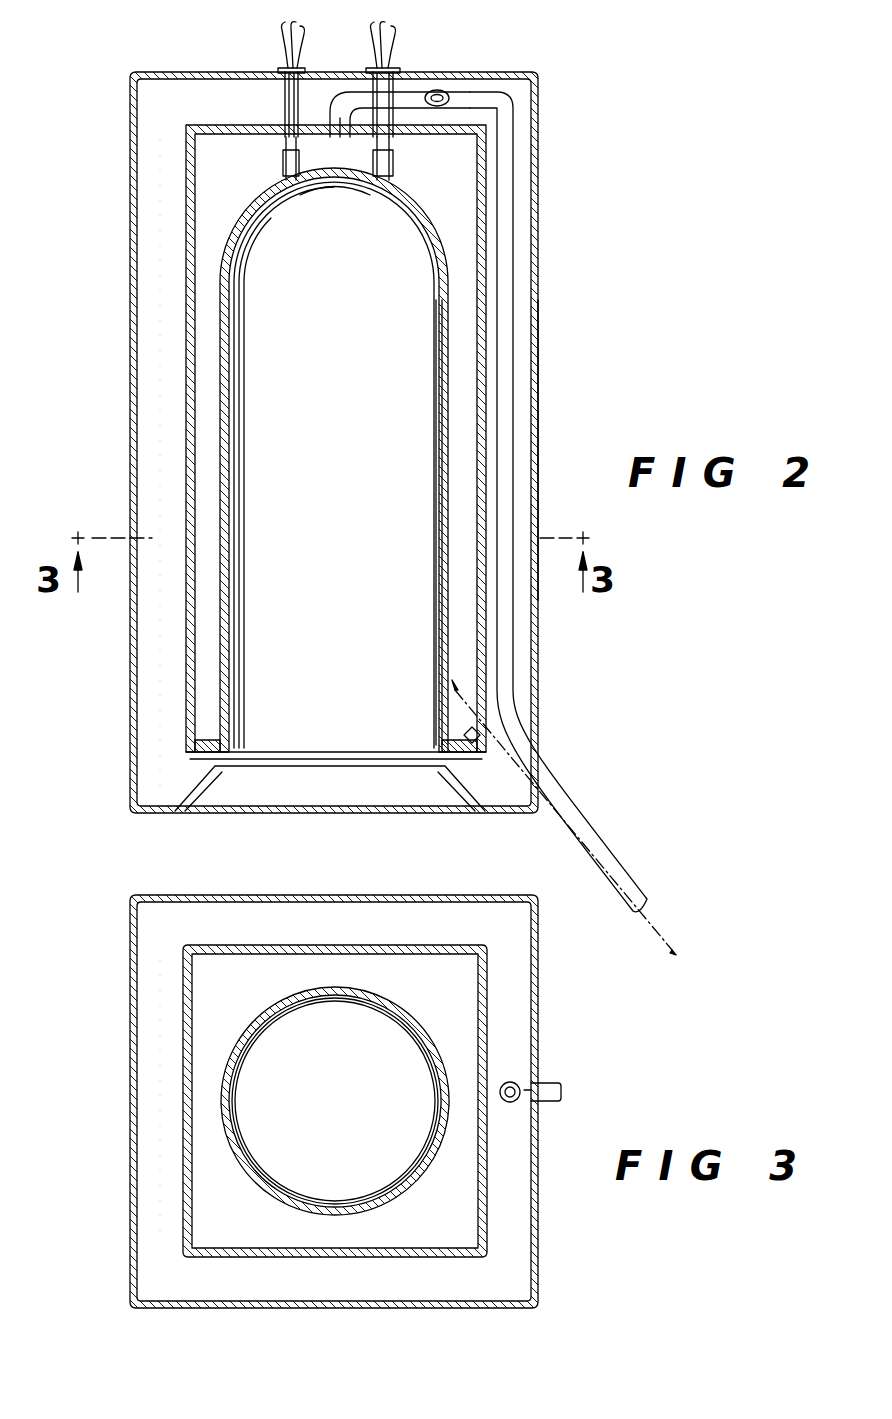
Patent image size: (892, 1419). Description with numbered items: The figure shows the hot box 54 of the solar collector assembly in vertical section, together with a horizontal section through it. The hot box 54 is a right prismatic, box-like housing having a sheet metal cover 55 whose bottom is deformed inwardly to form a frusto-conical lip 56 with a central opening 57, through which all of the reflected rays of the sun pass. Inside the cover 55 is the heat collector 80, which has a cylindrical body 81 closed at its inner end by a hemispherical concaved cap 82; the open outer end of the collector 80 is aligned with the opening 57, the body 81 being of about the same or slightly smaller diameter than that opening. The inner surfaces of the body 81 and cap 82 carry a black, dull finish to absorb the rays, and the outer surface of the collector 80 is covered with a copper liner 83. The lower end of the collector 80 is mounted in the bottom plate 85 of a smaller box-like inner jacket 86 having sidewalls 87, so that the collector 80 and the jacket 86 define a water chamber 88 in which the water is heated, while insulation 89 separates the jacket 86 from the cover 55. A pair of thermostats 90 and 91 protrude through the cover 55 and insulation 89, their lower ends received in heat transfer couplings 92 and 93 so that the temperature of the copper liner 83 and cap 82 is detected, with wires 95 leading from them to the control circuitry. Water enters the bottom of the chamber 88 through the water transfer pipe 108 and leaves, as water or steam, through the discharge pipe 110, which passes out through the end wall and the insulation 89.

In FIG. 2, the hot box 54 is at (540, 73).
In FIG. 2, the sheet metal cover 55 is at (538, 322).
In FIG. 3, the sheet metal cover 55 is at (538, 1006).
In FIG. 2, the frusto-conical lip 56 is at (390, 777).
In FIG. 2, the central opening 57 is at (318, 760).
In FIG. 2, the heat collector 80 is at (438, 563).
In FIG. 3, the heat collector 80 is at (284, 1190).
In FIG. 2, the cylindrical body 81 is at (440, 475).
In FIG. 3, the cylindrical body 81 is at (237, 1128).
In FIG. 2, the hemispherical concaved cap 82 is at (270, 192).
In FIG. 2, the copper liner 83 is at (443, 416).
In FIG. 3, the copper liner 83 is at (255, 1014).
In FIG. 2, the bottom plate 85 is at (450, 722).
In FIG. 3, the bottom plate 85 is at (460, 1225).
In FIG. 2, the inner jacket 86 is at (176, 432).
In FIG. 2, the sidewalls 87 is at (208, 342).
In FIG. 3, the sidewalls 87 is at (196, 1022).
In FIG. 2, the water chamber 88 is at (234, 229).
In FIG. 2, the insulation 89 is at (150, 236).
In FIG. 3, the insulation 89 is at (515, 1154).
In FIG. 2, the thermostat 90 is at (292, 85).
In FIG. 2, the thermostat 91 is at (404, 90).
In FIG. 2, the heat transfer coupling 92 is at (283, 152).
In FIG. 2, the heat transfer coupling 93 is at (393, 155).
In FIG. 2, the wires 95 is at (378, 50).
In FIG. 2, the water transfer pipe 108 is at (556, 845).
In FIG. 2, the discharge pipe 110 is at (446, 96).
In FIG. 3, the discharge pipe 110 is at (562, 1095).